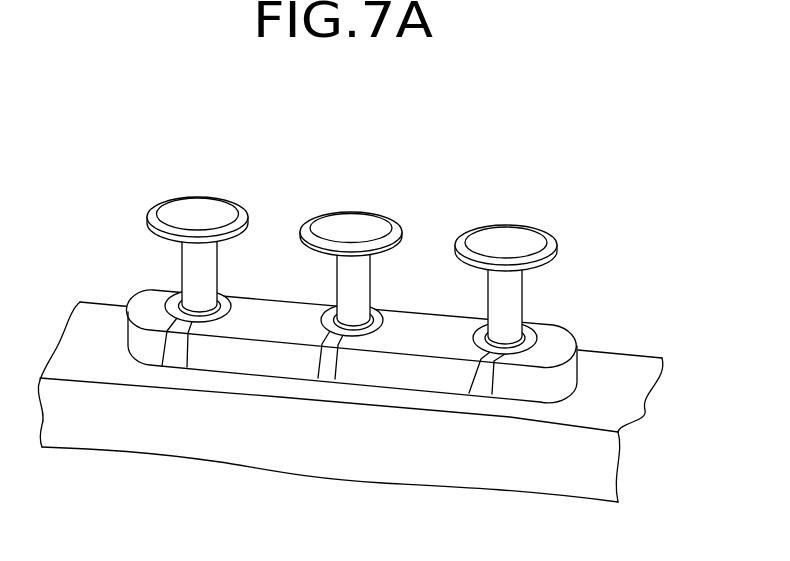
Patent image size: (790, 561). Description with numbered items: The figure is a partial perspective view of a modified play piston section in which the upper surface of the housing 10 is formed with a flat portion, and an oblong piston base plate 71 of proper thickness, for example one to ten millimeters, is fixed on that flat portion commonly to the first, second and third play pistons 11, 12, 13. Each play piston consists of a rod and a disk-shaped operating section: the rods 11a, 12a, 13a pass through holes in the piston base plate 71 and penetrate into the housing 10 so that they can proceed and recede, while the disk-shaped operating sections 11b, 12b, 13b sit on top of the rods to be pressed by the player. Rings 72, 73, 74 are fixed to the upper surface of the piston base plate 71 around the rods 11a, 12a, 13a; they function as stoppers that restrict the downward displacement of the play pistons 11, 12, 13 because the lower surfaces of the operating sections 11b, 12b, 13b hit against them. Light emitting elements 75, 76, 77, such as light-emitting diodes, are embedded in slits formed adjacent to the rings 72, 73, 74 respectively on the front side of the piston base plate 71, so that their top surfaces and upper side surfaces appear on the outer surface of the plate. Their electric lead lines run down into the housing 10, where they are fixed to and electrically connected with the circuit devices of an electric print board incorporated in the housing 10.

The housing 10 is at (632, 350).
The first play piston 11 is at (225, 213).
The rod of first play piston 11a is at (218, 270).
The disk-shaped operating section of first play piston 11b is at (198, 213).
The second play piston 12 is at (379, 226).
The rod of second play piston 12a is at (372, 284).
The disk-shaped operating section of second play piston 12b is at (352, 225).
The third play piston 13 is at (531, 243).
The rod of third play piston 13a is at (523, 297).
The disk-shaped operating section of third play piston 13b is at (505, 242).
The piston base plate 71 is at (133, 300).
The ring 72 is at (176, 293).
The ring 73 is at (330, 300).
The ring 74 is at (478, 320).
The light emitting element 75 is at (172, 367).
The light emitting element 76 is at (326, 379).
The light emitting element 77 is at (481, 394).